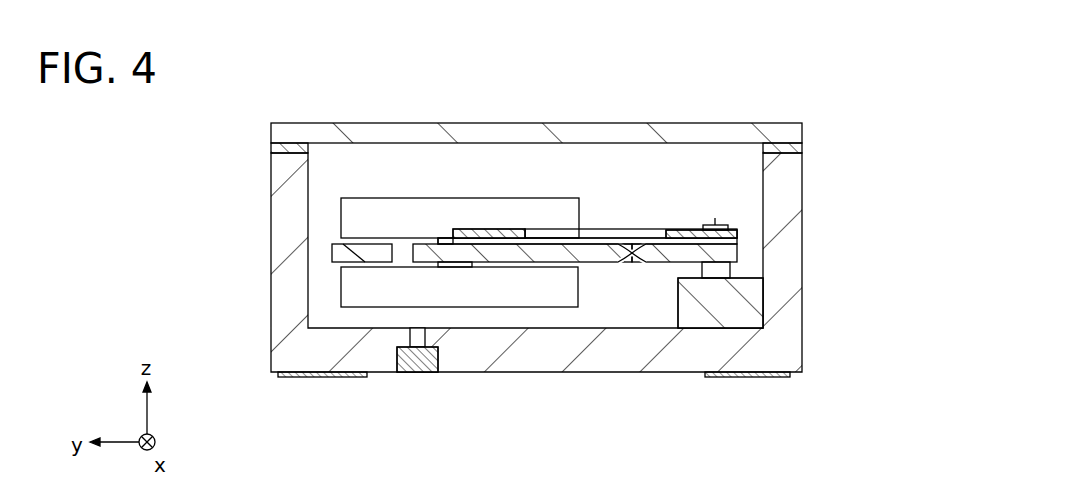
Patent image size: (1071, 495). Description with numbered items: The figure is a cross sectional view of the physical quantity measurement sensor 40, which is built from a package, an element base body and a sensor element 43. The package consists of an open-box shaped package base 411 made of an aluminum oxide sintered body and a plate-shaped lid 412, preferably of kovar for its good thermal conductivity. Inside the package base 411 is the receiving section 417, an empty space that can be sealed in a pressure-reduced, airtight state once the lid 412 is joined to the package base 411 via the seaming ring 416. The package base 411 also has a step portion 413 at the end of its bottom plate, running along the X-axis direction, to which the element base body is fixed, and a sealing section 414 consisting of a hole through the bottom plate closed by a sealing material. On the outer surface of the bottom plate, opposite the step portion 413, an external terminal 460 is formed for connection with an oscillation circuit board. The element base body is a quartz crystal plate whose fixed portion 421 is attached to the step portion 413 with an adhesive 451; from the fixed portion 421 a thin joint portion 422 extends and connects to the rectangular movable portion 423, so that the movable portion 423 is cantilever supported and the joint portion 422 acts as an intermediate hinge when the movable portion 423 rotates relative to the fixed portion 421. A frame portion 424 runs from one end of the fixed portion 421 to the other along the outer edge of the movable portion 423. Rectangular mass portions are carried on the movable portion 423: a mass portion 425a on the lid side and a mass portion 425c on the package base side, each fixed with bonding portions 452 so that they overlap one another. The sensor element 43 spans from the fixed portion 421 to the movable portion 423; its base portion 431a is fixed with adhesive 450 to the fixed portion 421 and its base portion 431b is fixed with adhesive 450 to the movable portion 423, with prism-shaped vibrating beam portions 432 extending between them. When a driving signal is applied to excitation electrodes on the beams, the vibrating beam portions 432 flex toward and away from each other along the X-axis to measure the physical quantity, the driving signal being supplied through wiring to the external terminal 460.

The physical quantity measurement sensor 40 is at (790, 95).
The package base 411 is at (797, 345).
The lid 412 is at (450, 134).
The step portion 413 is at (708, 320).
The sealing section 414 is at (417, 363).
The seaming ring 416 is at (273, 147).
The receiving section 417 is at (590, 165).
The fixed portion 421 is at (668, 262).
The joint portion 422 is at (649, 262).
The movable portion 423 is at (583, 262).
The frame portion 424 is at (373, 248).
The mass portion 425a is at (345, 218).
The mass portion 425c is at (345, 291).
The sensor element 43 is at (577, 242).
The base portion 431a is at (678, 232).
The base portion 431b is at (490, 231).
The vibrating beam portion 432 is at (608, 229).
The adhesive 450 is at (468, 238).
The adhesive 451 is at (724, 270).
The bonding portion 452 is at (450, 240).
The external terminal 460 is at (318, 377).